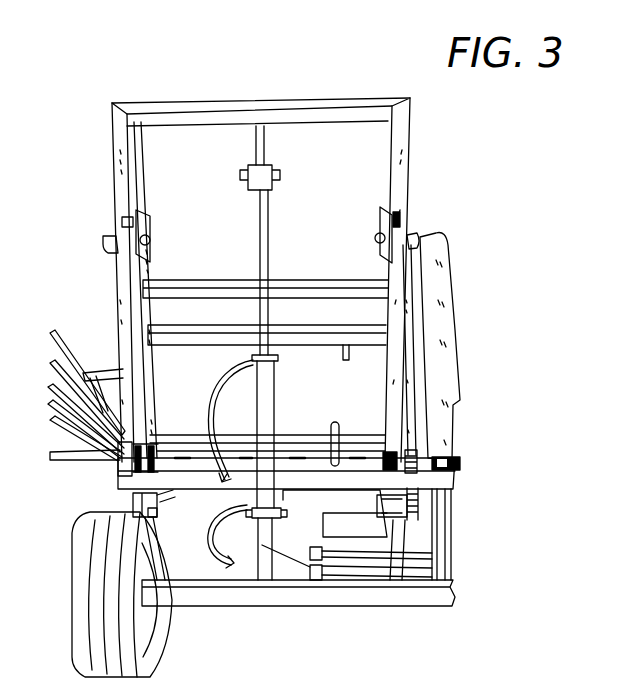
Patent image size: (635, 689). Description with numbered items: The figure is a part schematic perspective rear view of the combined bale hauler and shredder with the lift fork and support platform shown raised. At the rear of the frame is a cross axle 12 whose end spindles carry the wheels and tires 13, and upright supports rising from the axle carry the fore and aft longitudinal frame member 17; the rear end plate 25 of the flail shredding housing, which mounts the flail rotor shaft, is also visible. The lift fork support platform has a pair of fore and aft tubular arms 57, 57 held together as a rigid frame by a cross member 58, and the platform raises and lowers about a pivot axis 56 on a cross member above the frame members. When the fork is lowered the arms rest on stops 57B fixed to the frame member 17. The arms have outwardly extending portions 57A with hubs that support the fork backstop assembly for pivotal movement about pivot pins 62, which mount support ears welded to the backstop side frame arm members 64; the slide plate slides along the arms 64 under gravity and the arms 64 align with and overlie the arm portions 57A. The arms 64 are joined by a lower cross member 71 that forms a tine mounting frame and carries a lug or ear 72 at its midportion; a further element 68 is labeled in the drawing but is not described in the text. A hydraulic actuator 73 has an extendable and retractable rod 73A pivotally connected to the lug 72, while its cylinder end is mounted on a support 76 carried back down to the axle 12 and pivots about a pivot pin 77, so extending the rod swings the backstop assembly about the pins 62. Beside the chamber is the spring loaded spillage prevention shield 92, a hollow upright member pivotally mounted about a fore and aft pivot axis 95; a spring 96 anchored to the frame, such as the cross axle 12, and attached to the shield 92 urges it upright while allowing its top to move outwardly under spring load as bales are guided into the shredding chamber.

The cross axle 12 is at (247, 592).
The wheels and tires 13 is at (153, 662).
The longitudinal frame member 17 is at (140, 497).
The rear end plate 25 is at (299, 556).
The pivot axis 56 is at (160, 450).
The tubular arms 57 is at (129, 350).
The outwardly extending arm portions 57A is at (131, 271).
The stops 57B is at (147, 514).
The cross member 58 is at (307, 345).
The pivot pins 62 is at (151, 240).
The backstop side frame arm members 64 is at (118, 181).
The pin 68 is at (347, 425).
The lower cross member 71 is at (207, 124).
The lug or ear 72 is at (267, 150).
The hydraulic actuator 73 is at (271, 408).
The extendable and retractable rod 73A is at (279, 172).
The support 76 is at (266, 546).
The pivot pin 77 is at (282, 512).
The spring loaded spillage prevention shield 92 is at (441, 314).
The pivot axis 95 is at (452, 462).
The spring 96 is at (418, 508).